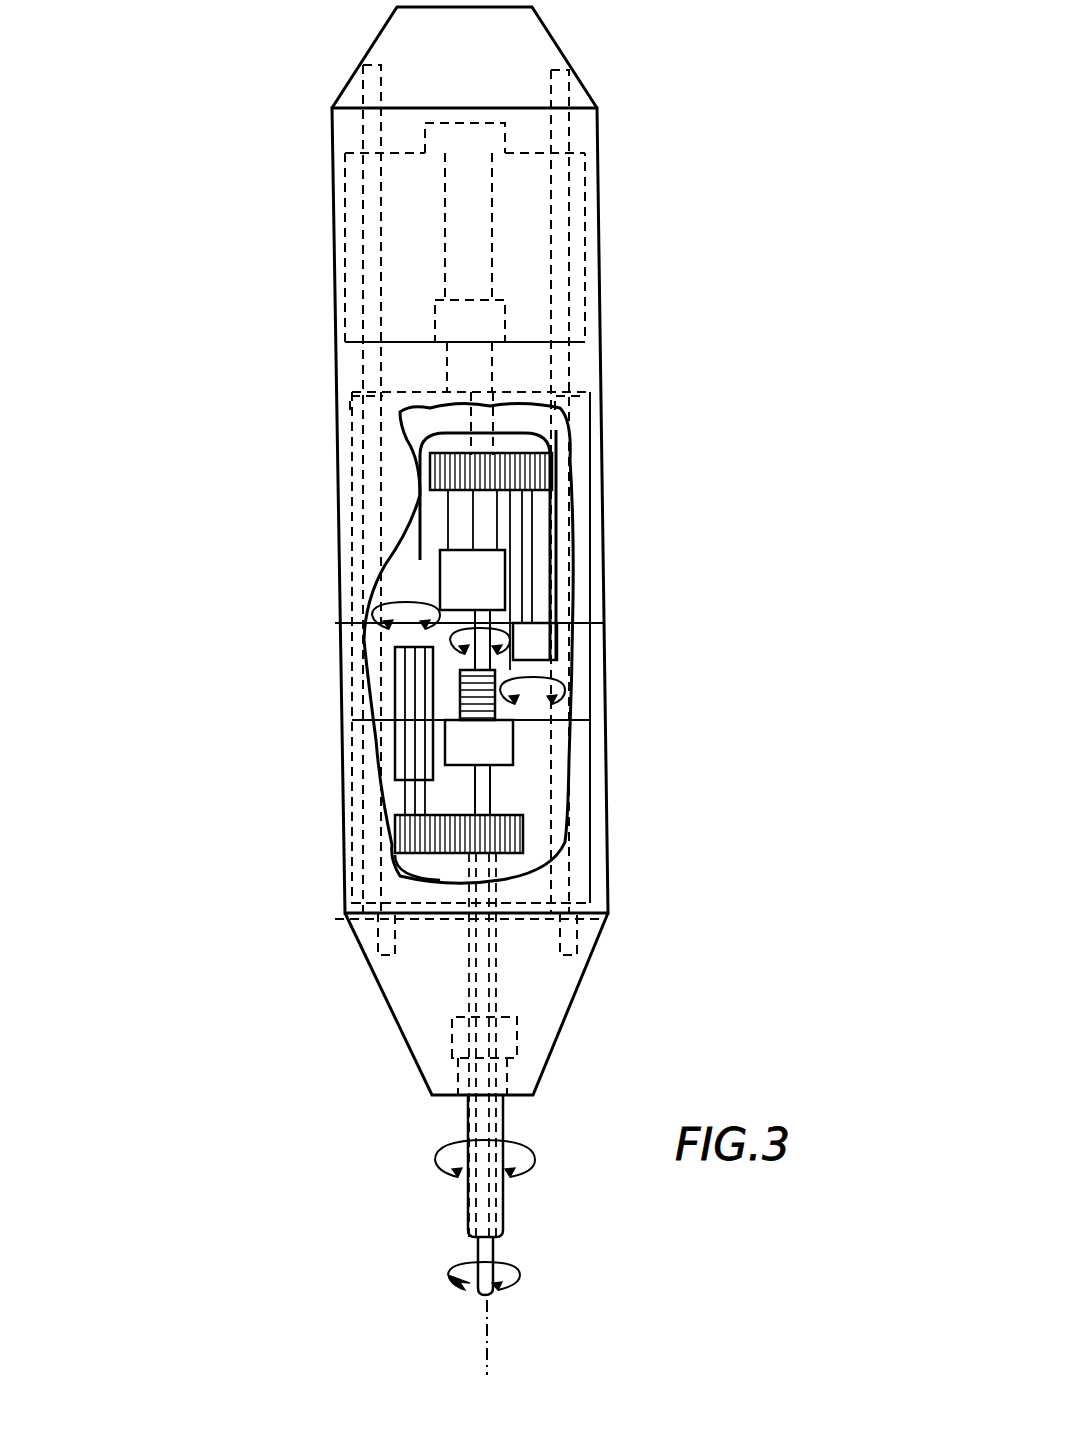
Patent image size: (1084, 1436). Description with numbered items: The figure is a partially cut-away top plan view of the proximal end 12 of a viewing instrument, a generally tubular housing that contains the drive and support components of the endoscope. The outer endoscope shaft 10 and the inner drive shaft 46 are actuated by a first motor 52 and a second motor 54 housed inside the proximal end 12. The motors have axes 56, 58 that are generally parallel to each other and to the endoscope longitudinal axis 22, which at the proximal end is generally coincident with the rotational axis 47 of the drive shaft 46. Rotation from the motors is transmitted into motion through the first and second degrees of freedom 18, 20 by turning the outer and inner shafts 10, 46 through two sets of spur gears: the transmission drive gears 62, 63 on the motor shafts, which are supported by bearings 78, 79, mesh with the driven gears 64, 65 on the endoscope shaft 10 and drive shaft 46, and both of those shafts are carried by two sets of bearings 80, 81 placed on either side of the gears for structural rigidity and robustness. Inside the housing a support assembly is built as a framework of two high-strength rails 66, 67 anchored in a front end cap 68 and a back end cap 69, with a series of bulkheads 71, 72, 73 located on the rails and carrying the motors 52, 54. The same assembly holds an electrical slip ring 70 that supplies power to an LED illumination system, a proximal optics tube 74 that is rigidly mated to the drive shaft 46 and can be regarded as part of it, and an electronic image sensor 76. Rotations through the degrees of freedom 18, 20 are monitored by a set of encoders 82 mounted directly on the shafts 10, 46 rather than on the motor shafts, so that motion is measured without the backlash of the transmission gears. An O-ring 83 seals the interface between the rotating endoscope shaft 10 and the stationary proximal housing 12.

The outer endoscope shaft 10 is at (470, 1112).
The proximal end 12 is at (301, 120).
The first degree of freedom 18 is at (531, 1152).
The second degree of freedom 20 is at (458, 690).
The endoscope longitudinal axis 22 is at (487, 1302).
The inner drive shaft 46 is at (440, 640).
The rotational axis 47 is at (560, 605).
The first motor 52 is at (400, 735).
The second motor 54 is at (555, 652).
The axis of first motor 56 is at (400, 620).
The axis of second motor 58 is at (560, 682).
The transmission drive gear 62 is at (400, 835).
The transmission drive gear 63 is at (550, 470).
The driven gear 64 is at (520, 830).
The driven gear 65 is at (440, 455).
The structural rail 66 is at (370, 355).
The structural rail 67 is at (565, 610).
The front end cap 68 is at (410, 1015).
The back end cap 69 is at (392, 40).
The electrical slip ring 70 is at (530, 730).
The bulkhead 71 is at (595, 803).
The bulkhead 72 is at (338, 538).
The bulkhead 73 is at (345, 218).
The proximal optics tube 74 is at (490, 372).
The electronic image sensor 76 is at (505, 140).
The bearing 78 is at (352, 922).
The bearing 79 is at (545, 445).
The bearing 80 is at (500, 322).
The bearing 81 is at (455, 755).
The encoder 82 is at (345, 420).
The O-ring 83 is at (520, 1085).